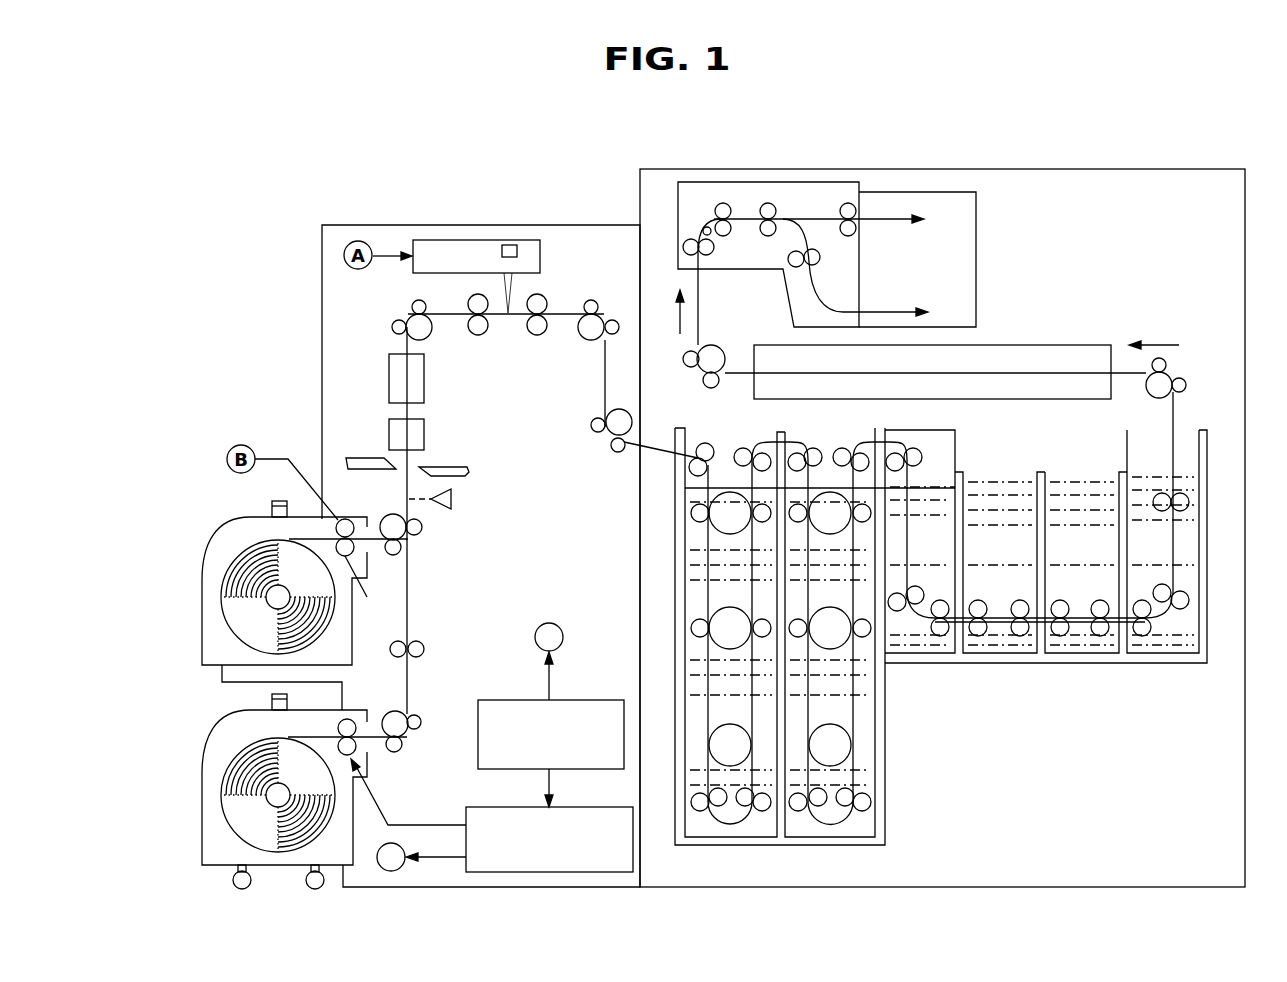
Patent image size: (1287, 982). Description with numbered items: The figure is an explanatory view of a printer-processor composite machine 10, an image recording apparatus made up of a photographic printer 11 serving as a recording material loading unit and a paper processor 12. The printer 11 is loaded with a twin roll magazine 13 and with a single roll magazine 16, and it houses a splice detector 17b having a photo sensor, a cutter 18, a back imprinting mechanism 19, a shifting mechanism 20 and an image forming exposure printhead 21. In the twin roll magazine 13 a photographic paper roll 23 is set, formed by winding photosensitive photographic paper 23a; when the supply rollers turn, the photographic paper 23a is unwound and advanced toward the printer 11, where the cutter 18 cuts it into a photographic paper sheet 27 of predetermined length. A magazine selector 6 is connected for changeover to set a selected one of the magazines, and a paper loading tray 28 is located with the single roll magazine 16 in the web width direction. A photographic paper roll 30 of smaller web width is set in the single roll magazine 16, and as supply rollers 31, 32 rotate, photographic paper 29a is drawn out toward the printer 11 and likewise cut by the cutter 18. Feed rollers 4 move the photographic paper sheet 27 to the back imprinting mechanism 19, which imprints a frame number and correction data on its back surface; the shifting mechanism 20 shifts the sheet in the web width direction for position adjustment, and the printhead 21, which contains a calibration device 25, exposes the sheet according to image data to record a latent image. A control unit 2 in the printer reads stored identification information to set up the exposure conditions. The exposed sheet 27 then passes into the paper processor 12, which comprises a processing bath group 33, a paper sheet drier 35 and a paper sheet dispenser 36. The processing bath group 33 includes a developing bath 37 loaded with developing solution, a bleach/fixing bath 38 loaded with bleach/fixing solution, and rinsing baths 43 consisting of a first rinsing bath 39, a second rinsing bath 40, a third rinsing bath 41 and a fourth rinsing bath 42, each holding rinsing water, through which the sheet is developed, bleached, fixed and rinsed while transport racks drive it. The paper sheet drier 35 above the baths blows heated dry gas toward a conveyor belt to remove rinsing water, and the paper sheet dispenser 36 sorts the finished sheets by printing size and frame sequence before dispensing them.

The control unit 2 is at (603, 698).
The feed rollers 4 is at (412, 538).
The magazine selector 6 is at (470, 805).
The printer-processor composite machine 10 is at (262, 236).
The photographic printer 11 is at (400, 188).
The paper processor 12 is at (970, 157).
The twin roll magazine 13 is at (189, 770).
The single roll magazine 16 is at (190, 545).
The splice detector 17b is at (450, 497).
The cutter 18 is at (468, 470).
The back imprinting mechanism 19 is at (390, 435).
The shifting mechanism 20 is at (390, 375).
The image forming exposure printhead 21 is at (539, 255).
The photographic paper roll 23 is at (237, 815).
The photographic paper 23a is at (410, 590).
The calibration device 25 is at (508, 243).
The photographic paper sheet 27 is at (408, 410).
The paper loading tray 28 is at (235, 672).
The photographic paper 29a is at (382, 512).
The photographic paper roll 30 is at (232, 600).
The supply roller 31 is at (337, 518).
The supply roller 32 is at (368, 589).
The processing bath group 33 is at (898, 645).
The paper sheet drier 35 is at (1068, 353).
The paper sheet dispenser 36 is at (797, 190).
The developing bath 37 is at (690, 593).
The bleach/fixing bath 38 is at (867, 763).
The first rinsing bath 39 is at (942, 650).
The second rinsing bath 40 is at (1017, 650).
The third rinsing bath 41 is at (1078, 650).
The fourth rinsing bath 42 is at (1152, 586).
The rinsing baths 43 is at (1046, 611).